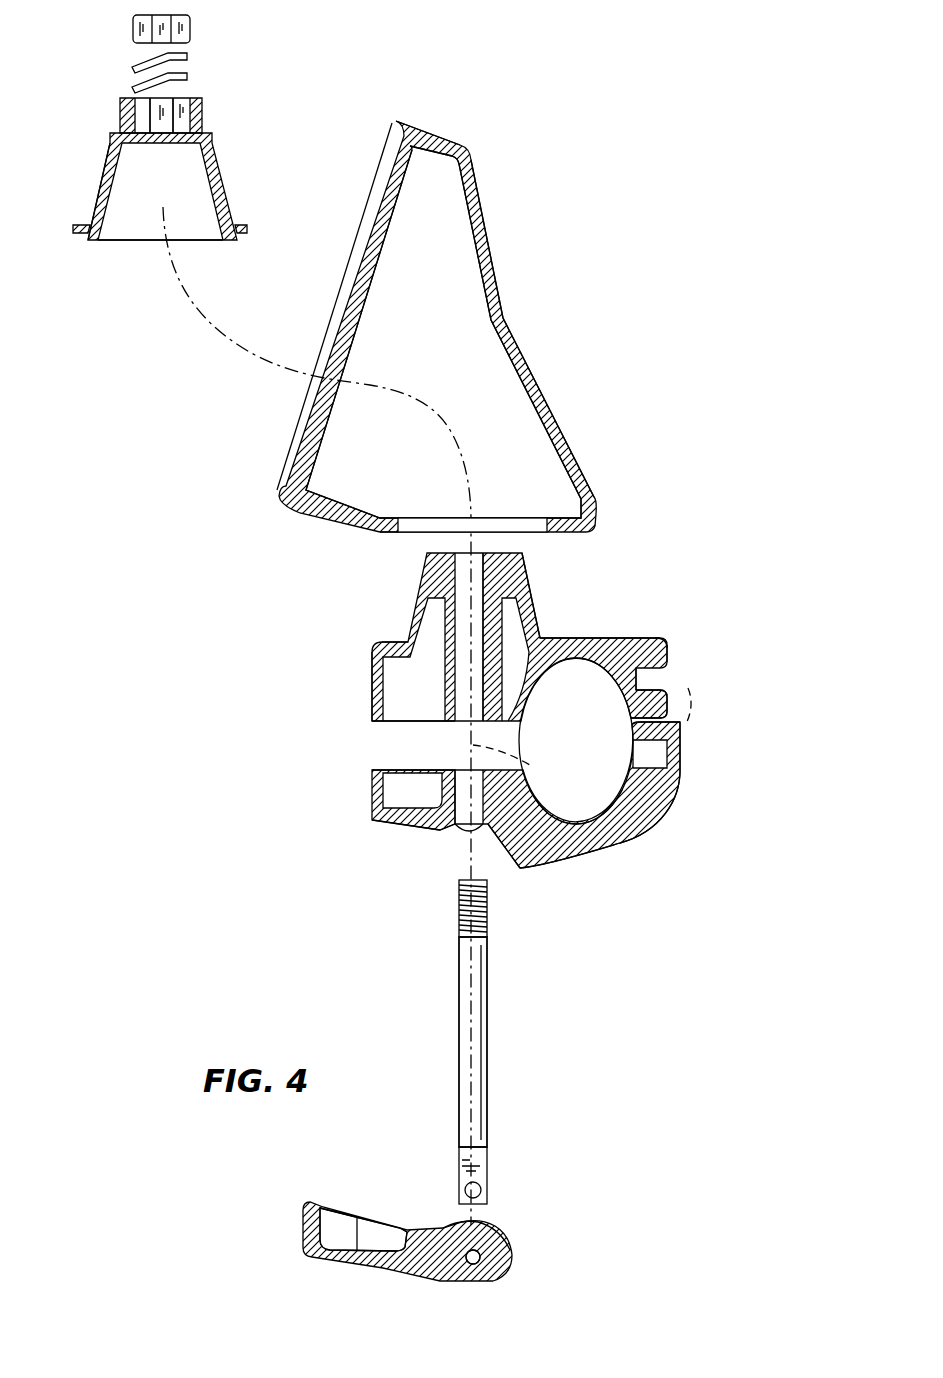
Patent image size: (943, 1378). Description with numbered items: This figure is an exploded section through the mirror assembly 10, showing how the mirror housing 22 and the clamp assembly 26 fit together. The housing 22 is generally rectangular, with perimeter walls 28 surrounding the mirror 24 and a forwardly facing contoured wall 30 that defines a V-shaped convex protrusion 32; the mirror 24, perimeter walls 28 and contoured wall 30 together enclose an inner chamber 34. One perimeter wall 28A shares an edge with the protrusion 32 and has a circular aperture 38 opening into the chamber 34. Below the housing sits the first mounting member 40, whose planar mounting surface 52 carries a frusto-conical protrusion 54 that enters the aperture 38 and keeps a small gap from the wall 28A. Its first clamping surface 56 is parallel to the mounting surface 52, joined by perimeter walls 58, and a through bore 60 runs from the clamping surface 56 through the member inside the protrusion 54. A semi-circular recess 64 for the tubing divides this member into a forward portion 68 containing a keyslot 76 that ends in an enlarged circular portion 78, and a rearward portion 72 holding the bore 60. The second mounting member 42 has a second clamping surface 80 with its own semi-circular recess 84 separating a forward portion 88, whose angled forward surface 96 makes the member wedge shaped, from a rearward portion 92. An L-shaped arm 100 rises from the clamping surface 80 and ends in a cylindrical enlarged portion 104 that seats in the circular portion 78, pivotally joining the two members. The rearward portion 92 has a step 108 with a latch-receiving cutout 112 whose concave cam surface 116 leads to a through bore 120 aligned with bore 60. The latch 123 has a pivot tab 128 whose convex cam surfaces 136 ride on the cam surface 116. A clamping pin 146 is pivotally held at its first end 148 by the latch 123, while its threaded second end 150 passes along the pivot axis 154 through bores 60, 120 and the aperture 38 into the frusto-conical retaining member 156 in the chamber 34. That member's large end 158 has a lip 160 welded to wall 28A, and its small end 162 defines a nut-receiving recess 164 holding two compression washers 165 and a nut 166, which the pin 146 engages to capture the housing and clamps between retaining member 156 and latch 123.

The mirror assembly 10 is at (674, 430).
The mirror housing 22 is at (497, 291).
The mirror 24 is at (347, 263).
The clamp assembly 26 is at (268, 907).
The perimeter walls 28 is at (441, 119).
The perimeter wall 28A is at (382, 535).
The contoured wall 30 is at (548, 401).
The convex protrusion 32 is at (518, 344).
The inner chamber 34 is at (437, 357).
The aperture 38 is at (536, 534).
The first mounting member 40 is at (376, 648).
The second mounting member 42 is at (372, 796).
The mounting surface 52 is at (580, 637).
The frusto-conical protrusion 54 is at (532, 613).
The first clamping surface 56 is at (400, 724).
The perimeter walls 58 is at (373, 668).
The through bore 60 is at (482, 720).
The semi-circular recess 64 is at (597, 668).
The forward portion 68 is at (658, 637).
The rearward portion 72 is at (397, 637).
The keyslot 76 is at (668, 681).
The circular portion 78 is at (631, 703).
The second clamping surface 80 is at (375, 772).
The semi-circular recess 84 is at (553, 821).
The forward portion 88 is at (648, 822).
The rearward portion 92 is at (410, 826).
The forward surface 96 is at (597, 849).
The L-shaped arm 100 is at (682, 753).
The cylindrical enlarged portion 104 is at (640, 742).
The step 108 is at (497, 860).
The latch-receiving cutout 112 is at (453, 838).
The concave cam surface 116 is at (466, 850).
The through bore 120 is at (460, 770).
The latch 123 is at (382, 1270).
The pivot tab 128 is at (487, 1283).
The convex cam surfaces 136 is at (494, 1232).
The clamping pin 146 is at (489, 1110).
The first end 148 is at (489, 1192).
The second end 150 is at (493, 930).
The pivot axis 154 is at (525, 765).
The frusto-conical retaining member 156 is at (213, 206).
The large end 158 is at (100, 222).
The lip 160 is at (88, 233).
The small end 162 is at (120, 122).
The nut-receiving recess 164 is at (186, 100).
The compression washers 165 is at (133, 84).
The nut 166 is at (190, 22).